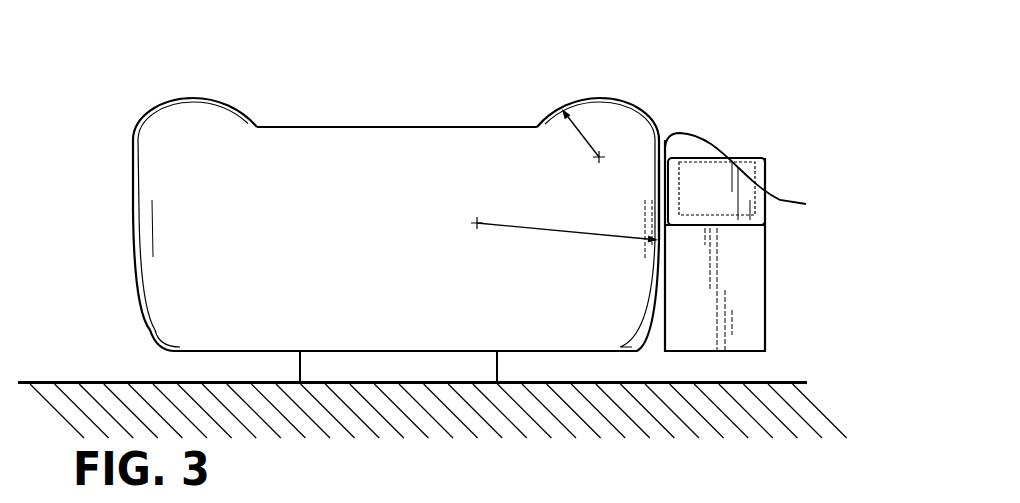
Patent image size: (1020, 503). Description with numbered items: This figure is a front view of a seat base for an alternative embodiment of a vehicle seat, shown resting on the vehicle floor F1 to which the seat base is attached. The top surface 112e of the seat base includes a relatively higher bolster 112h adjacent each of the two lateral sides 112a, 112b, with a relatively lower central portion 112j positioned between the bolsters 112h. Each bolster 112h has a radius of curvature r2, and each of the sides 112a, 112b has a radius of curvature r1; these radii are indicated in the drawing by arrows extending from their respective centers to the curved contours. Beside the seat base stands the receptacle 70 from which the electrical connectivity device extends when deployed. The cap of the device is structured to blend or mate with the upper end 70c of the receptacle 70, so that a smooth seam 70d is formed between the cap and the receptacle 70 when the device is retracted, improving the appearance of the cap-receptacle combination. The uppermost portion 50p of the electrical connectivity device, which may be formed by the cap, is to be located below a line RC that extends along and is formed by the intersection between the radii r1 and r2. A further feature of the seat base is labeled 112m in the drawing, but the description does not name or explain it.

The side 112b is at (133, 193).
The bolster 112h is at (193, 97).
The top surface 112e is at (440, 127).
The central portion 112j is at (310, 127).
The right upper wall portion 112m is at (658, 124).
The side 112a is at (653, 311).
The receptacle 70 is at (772, 337).
The upper end of the receptacle 70c is at (747, 268).
The smooth seam 70d is at (693, 220).
The uppermost portion of the electrical connectivity device 50p is at (758, 157).
The line RC is at (753, 175).
The radius of curvature r1 is at (564, 222).
The radius of curvature r2 is at (589, 136).
The floor F1 is at (80, 382).